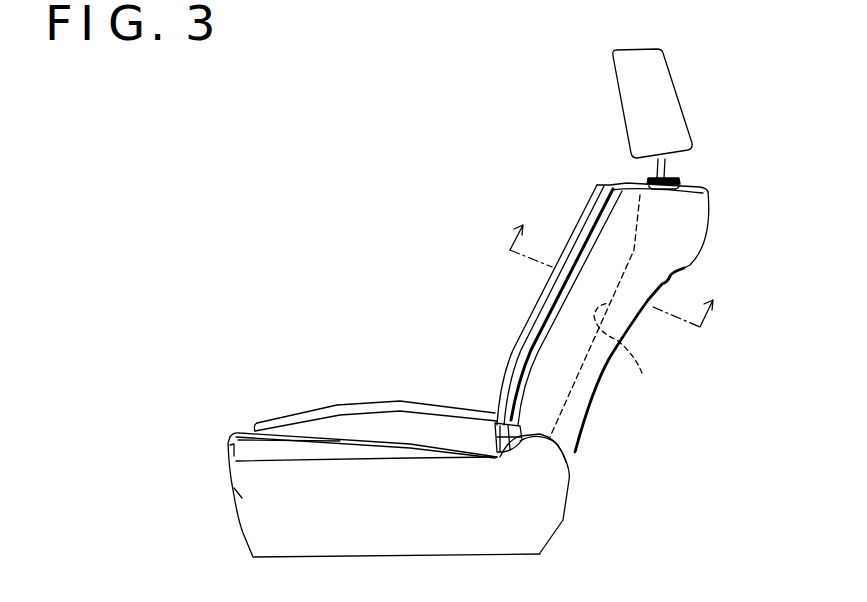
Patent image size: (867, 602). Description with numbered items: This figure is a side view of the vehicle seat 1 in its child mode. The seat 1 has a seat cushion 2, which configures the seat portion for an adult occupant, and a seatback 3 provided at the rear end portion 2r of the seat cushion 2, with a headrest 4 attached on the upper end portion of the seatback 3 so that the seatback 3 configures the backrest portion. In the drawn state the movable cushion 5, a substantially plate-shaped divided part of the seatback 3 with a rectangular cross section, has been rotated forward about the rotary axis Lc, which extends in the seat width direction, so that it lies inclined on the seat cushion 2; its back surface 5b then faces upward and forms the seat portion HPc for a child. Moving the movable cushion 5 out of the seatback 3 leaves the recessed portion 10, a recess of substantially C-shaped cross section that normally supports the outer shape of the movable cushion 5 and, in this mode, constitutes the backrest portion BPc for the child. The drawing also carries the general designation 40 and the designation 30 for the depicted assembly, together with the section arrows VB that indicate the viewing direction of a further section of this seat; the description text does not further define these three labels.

The seat 1 is at (442, 303).
The seat frame 40 is at (488, 303).
The seat body 30 is at (488, 303).
The headrest 4 is at (672, 93).
The seatback 3 is at (627, 317).
The seat cushion 2 is at (429, 468).
The rear end portion 2r is at (567, 468).
The movable cushion 5 is at (375, 382).
The back surface 5b is at (375, 416).
The seat portion for child HPc is at (398, 402).
The recessed portion 10 is at (662, 353).
The backrest portion for child BPc is at (618, 338).
The rotary axis Lc is at (515, 423).
The view direction B VB is at (618, 263).